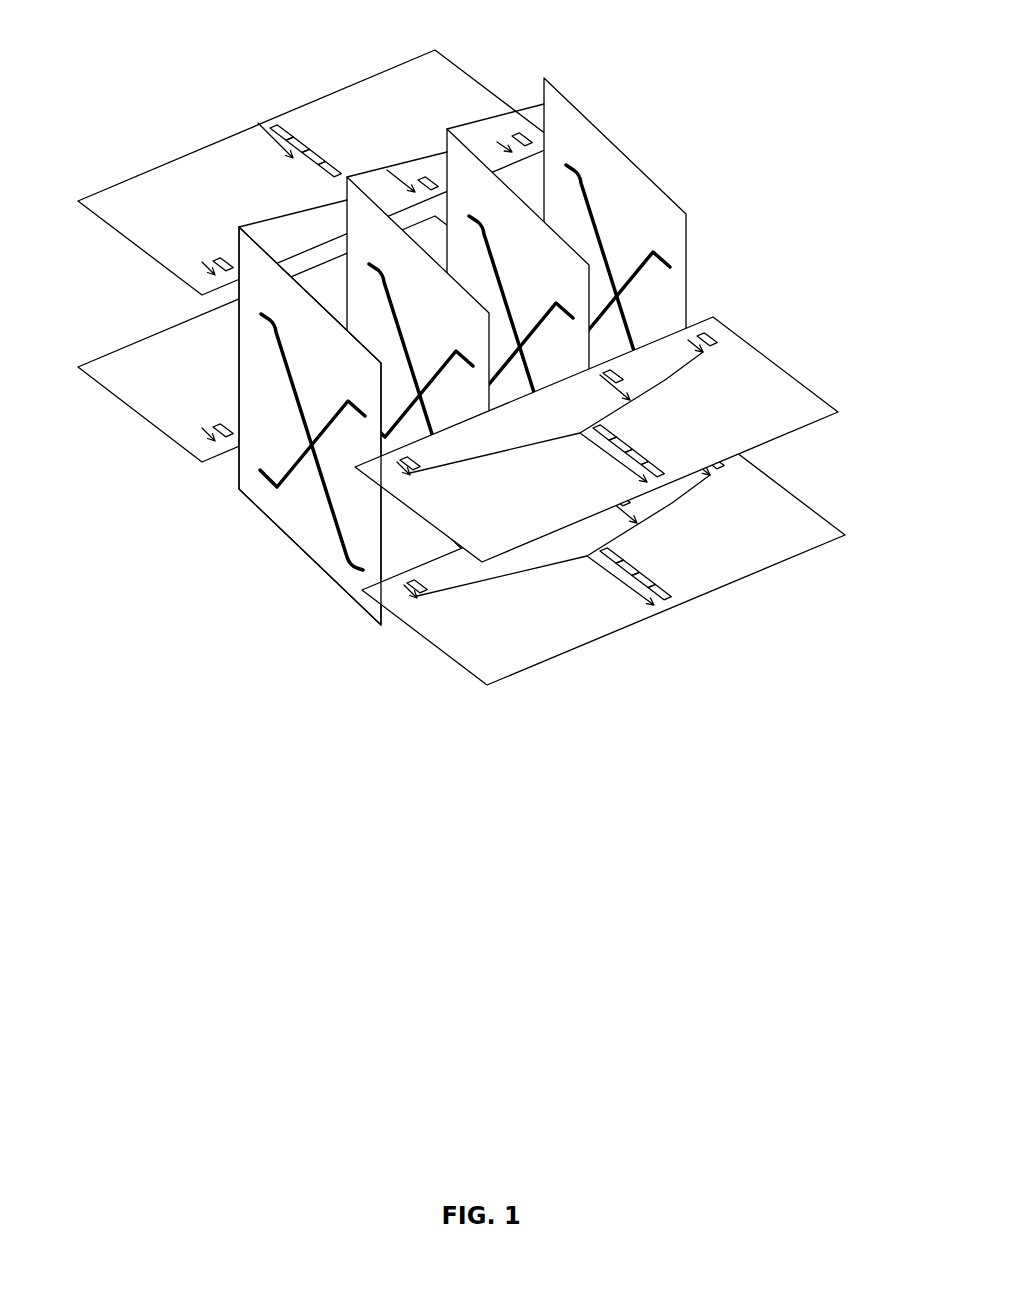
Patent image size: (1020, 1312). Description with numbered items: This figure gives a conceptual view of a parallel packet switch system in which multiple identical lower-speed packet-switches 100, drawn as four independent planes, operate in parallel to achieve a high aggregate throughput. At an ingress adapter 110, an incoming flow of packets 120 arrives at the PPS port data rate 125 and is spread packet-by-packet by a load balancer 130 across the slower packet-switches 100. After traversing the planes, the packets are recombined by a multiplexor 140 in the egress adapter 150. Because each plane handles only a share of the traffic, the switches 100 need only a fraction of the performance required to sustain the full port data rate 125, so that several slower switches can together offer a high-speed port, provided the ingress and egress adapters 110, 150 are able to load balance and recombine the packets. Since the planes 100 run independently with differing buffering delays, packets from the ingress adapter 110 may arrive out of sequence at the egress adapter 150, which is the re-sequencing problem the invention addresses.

The lower-speed packet-switches 100 is at (372, 354).
The ingress adapter 110 is at (480, 82).
The incoming flow of packets 120 is at (278, 120).
The PPS port data rate 125 is at (262, 127).
The load balancer 130 is at (230, 241).
The multiplexor 140 is at (665, 380).
The egress adapter 150 is at (827, 400).